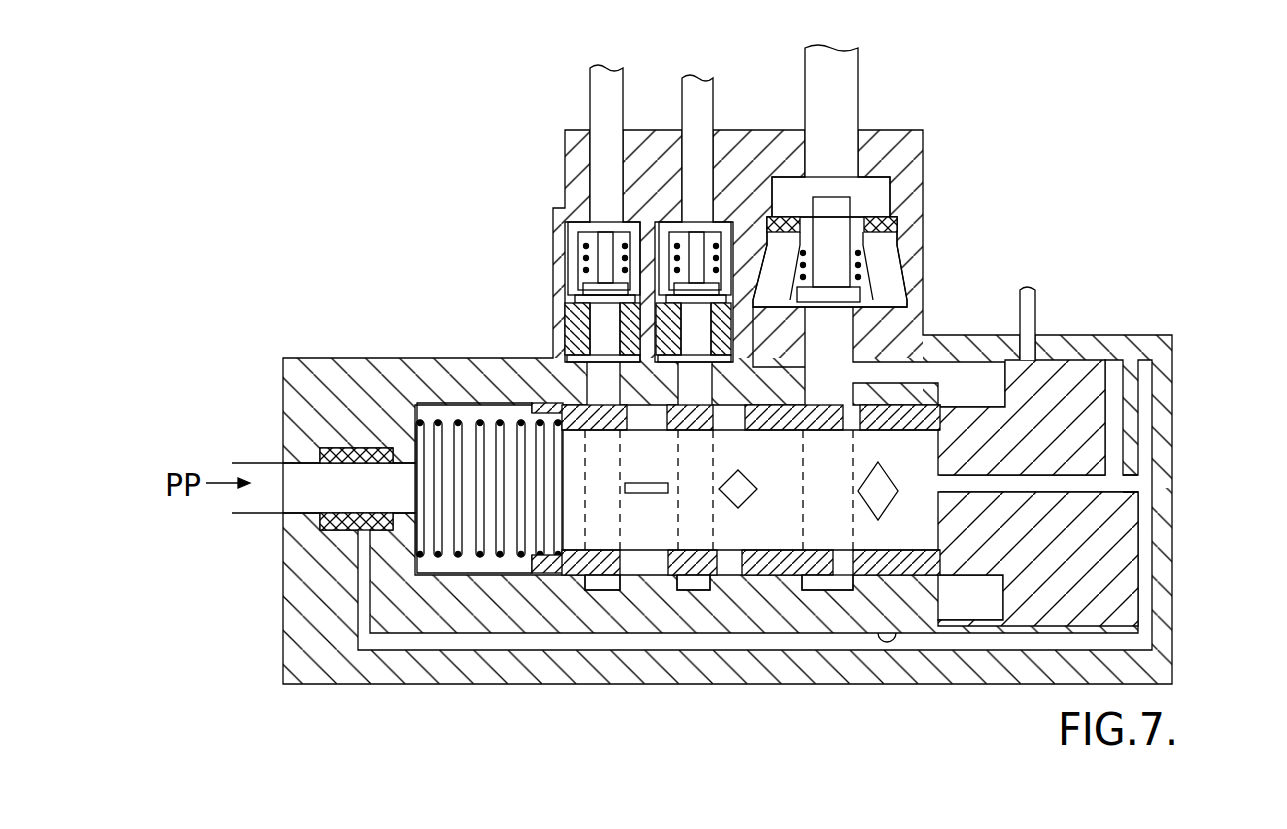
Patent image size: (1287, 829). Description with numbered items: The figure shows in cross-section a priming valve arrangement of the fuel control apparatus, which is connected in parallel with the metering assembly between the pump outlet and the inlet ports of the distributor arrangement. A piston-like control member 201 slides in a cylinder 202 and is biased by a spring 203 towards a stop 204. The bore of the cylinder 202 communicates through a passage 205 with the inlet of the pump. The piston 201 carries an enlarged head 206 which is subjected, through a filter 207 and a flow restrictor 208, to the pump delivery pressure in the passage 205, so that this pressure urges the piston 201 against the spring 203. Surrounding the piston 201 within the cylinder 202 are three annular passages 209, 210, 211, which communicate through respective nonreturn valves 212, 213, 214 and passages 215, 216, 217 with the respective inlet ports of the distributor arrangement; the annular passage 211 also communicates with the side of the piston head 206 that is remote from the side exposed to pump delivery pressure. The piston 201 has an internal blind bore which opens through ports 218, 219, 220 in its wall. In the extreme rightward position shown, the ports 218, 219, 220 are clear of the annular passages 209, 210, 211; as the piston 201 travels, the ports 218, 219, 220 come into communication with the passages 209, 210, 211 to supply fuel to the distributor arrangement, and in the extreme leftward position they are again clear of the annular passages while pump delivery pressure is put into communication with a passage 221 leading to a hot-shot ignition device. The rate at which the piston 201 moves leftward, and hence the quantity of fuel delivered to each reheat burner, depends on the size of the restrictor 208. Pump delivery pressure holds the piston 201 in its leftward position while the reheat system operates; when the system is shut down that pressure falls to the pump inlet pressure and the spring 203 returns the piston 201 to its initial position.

The piston-like control member 201 is at (575, 403).
The cylinder 202 is at (478, 400).
The spring 203 is at (458, 427).
The stop 204 is at (1150, 483).
The passage 205 is at (255, 512).
The enlarged head 206 is at (1068, 383).
The filter 207 is at (345, 447).
The flow restrictor 208 is at (888, 651).
The annular passage 209 is at (600, 590).
The annular passage 210 is at (695, 585).
The annular passage 211 is at (833, 585).
The nonreturn valve 212 is at (550, 238).
The nonreturn valve 213 is at (733, 196).
The nonreturn valve 214 is at (930, 213).
The passage 215 is at (598, 84).
The passage 216 is at (700, 100).
The passage 217 is at (840, 93).
The port 218 is at (643, 436).
The port 219 is at (748, 410).
The port 220 is at (880, 410).
The passage 221 is at (1027, 300).